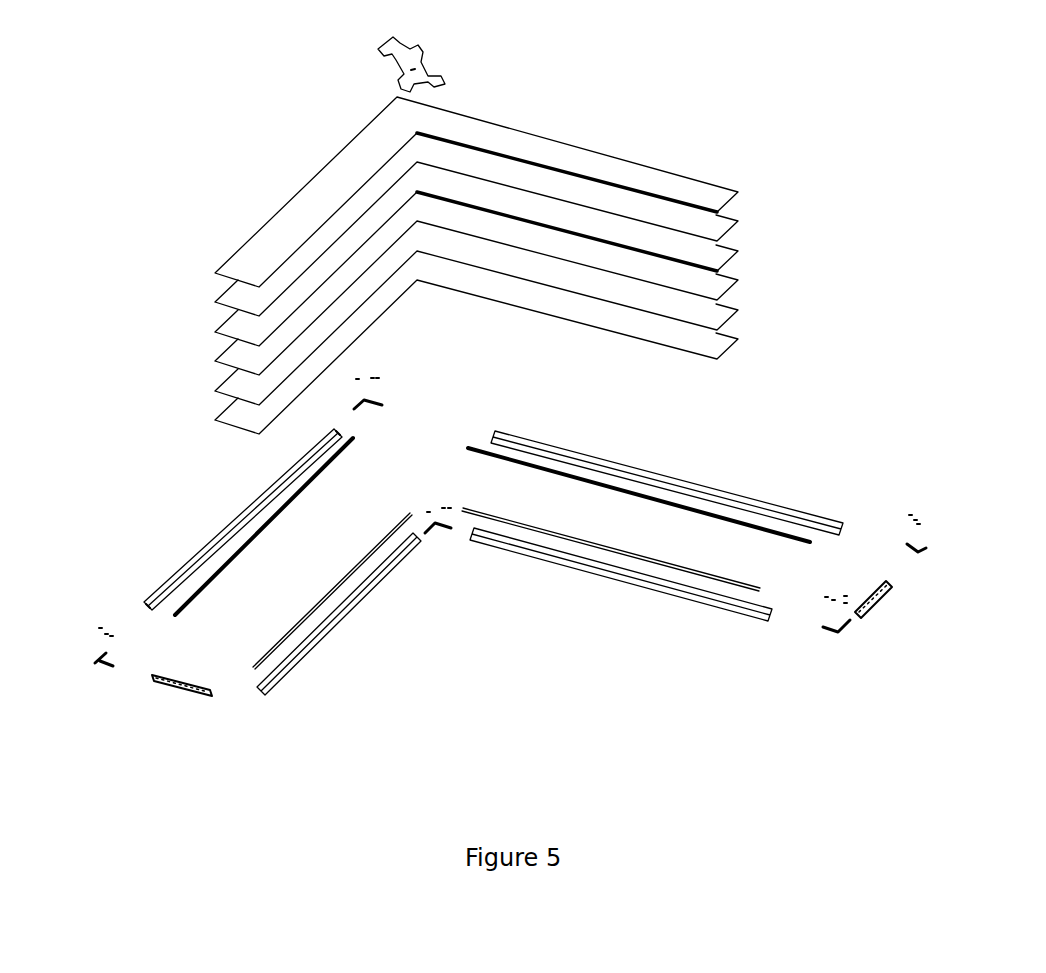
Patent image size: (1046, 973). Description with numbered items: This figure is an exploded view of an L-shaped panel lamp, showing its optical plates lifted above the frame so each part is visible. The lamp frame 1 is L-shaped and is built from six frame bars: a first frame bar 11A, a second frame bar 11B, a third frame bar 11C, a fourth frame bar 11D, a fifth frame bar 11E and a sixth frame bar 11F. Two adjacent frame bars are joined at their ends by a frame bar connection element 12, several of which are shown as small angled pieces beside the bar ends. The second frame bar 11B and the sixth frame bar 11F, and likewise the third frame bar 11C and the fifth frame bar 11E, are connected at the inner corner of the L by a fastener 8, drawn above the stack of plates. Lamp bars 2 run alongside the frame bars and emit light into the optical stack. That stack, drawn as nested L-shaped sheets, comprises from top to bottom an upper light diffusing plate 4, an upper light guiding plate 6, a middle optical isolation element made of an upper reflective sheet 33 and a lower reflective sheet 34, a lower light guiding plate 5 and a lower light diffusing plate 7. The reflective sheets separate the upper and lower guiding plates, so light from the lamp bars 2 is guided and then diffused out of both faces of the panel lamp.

The lamp frame 1 is at (416, 604).
The lamp bars 2 is at (467, 449).
The upper light diffusing plate 4 is at (227, 305).
The lower light guiding plate 5 is at (731, 312).
The upper light guiding plate 6 is at (572, 153).
The lower light diffusing plate 7 is at (721, 359).
The fastener 8 is at (393, 46).
The first frame bar 11A is at (180, 692).
The second frame bar 11B is at (230, 518).
The third frame bar 11C is at (310, 655).
The fourth frame bar 11D is at (877, 600).
The fifth frame bar 11E is at (650, 590).
The sixth frame bar 11F is at (668, 470).
The frame bar connection element 12 is at (372, 407).
The upper reflective sheet 33 is at (215, 333).
The lower reflective sheet 34 is at (216, 374).